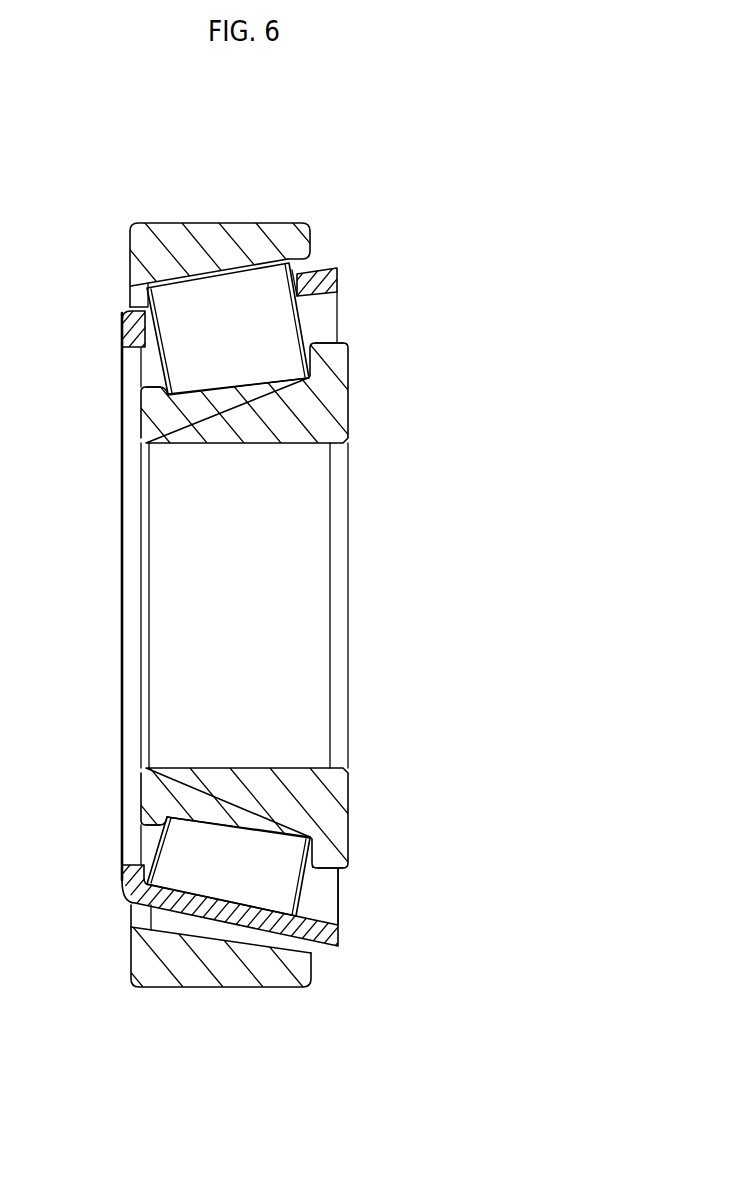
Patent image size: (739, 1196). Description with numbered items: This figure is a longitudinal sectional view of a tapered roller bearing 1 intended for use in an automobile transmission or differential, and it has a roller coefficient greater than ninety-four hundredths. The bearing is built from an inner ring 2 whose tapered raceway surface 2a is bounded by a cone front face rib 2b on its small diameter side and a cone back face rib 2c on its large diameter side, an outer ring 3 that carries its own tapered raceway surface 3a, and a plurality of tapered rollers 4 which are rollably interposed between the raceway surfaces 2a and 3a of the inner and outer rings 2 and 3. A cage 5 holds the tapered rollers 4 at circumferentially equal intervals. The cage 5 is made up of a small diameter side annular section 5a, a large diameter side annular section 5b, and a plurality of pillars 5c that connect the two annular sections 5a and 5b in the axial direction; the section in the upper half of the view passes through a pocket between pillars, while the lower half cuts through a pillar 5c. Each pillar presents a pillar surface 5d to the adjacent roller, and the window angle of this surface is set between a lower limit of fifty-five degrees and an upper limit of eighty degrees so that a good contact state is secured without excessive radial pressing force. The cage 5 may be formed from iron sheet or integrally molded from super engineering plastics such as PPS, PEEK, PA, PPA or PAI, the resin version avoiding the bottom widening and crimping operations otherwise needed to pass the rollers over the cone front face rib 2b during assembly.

The tapered roller bearing 1 is at (342, 227).
The inner ring 2 is at (313, 402).
The tapered raceway surface 2a is at (228, 390).
The cone front face rib 2b is at (142, 388).
The cone back face rib 2c is at (327, 357).
The outer ring 3 is at (176, 238).
The tapered raceway surface 3a is at (229, 280).
The tapered roller 4 is at (287, 342).
The cage 5 is at (117, 313).
The small diameter side annular section 5a is at (128, 330).
The large diameter side annular section 5b is at (338, 279).
The pillar 5c is at (265, 928).
The pillar surface 5d is at (289, 279).